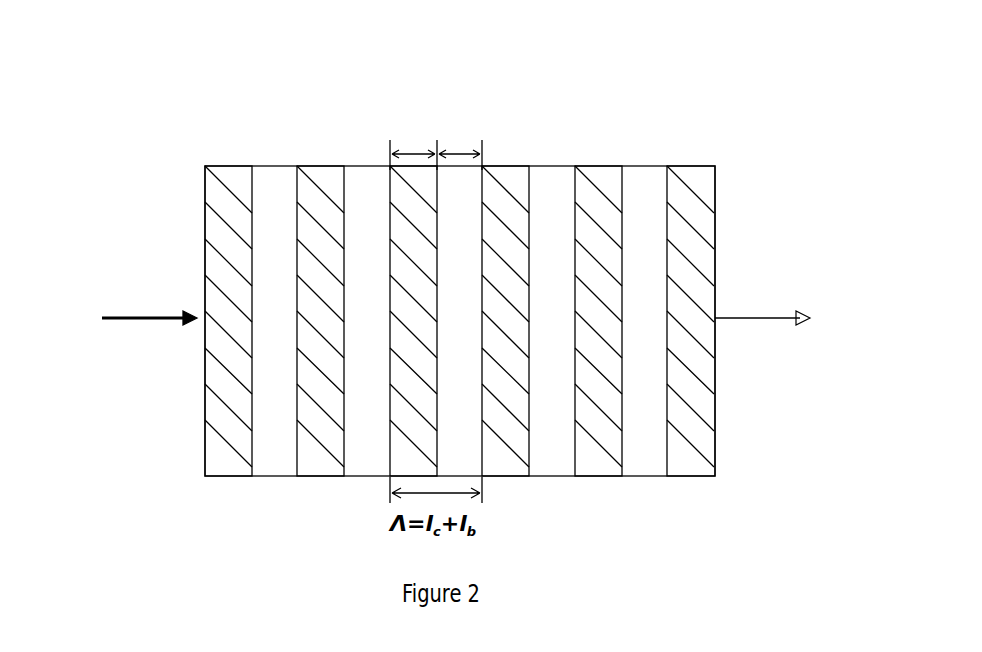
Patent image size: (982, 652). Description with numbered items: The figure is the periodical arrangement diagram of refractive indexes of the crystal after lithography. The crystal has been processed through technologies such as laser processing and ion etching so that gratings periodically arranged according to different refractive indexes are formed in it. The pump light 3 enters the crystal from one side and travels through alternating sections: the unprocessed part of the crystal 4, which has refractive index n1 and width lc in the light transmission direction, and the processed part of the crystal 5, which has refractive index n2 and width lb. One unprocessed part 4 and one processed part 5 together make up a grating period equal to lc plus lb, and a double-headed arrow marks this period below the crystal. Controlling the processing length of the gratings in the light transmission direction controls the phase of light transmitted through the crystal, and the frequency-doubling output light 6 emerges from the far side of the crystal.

The pump light 3 is at (168, 303).
The unprocessed part of the crystal 4 is at (403, 120).
The processed part of the crystal 5 is at (468, 118).
The frequency-doubling output light 6 is at (762, 302).